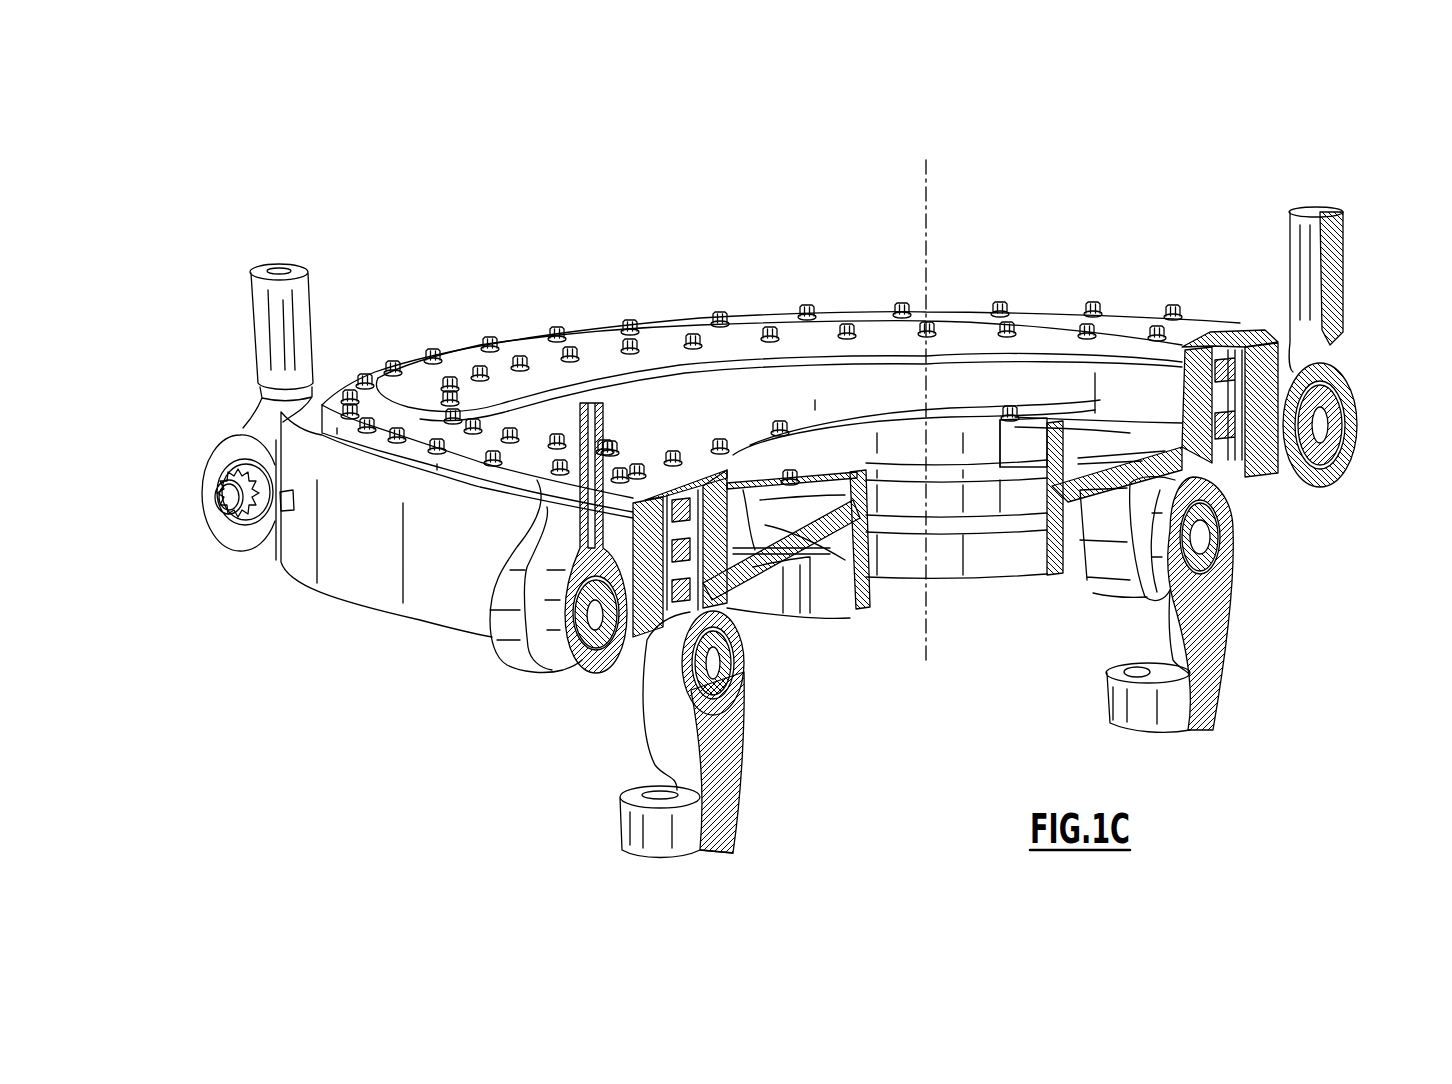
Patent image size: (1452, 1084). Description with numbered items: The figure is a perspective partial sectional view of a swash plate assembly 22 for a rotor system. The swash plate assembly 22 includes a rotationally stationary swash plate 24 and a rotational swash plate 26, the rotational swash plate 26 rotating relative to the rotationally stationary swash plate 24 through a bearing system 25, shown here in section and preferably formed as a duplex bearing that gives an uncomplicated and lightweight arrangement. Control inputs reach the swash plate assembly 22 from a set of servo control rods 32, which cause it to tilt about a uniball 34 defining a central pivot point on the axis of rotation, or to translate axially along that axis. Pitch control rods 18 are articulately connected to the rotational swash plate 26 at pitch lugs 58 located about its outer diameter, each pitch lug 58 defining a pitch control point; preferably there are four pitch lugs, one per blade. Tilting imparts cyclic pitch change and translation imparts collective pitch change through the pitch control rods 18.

The pitch control rod 18 is at (1343, 262).
The swash plate assembly 22 is at (721, 434).
The rotationally stationary swash plate 24 is at (793, 610).
The bearing system 25 is at (705, 597).
The rotational swash plate 26 is at (420, 595).
The servo control rod 32 is at (1221, 704).
The uniball 34 is at (1028, 563).
The pitch lug 58 is at (513, 655).